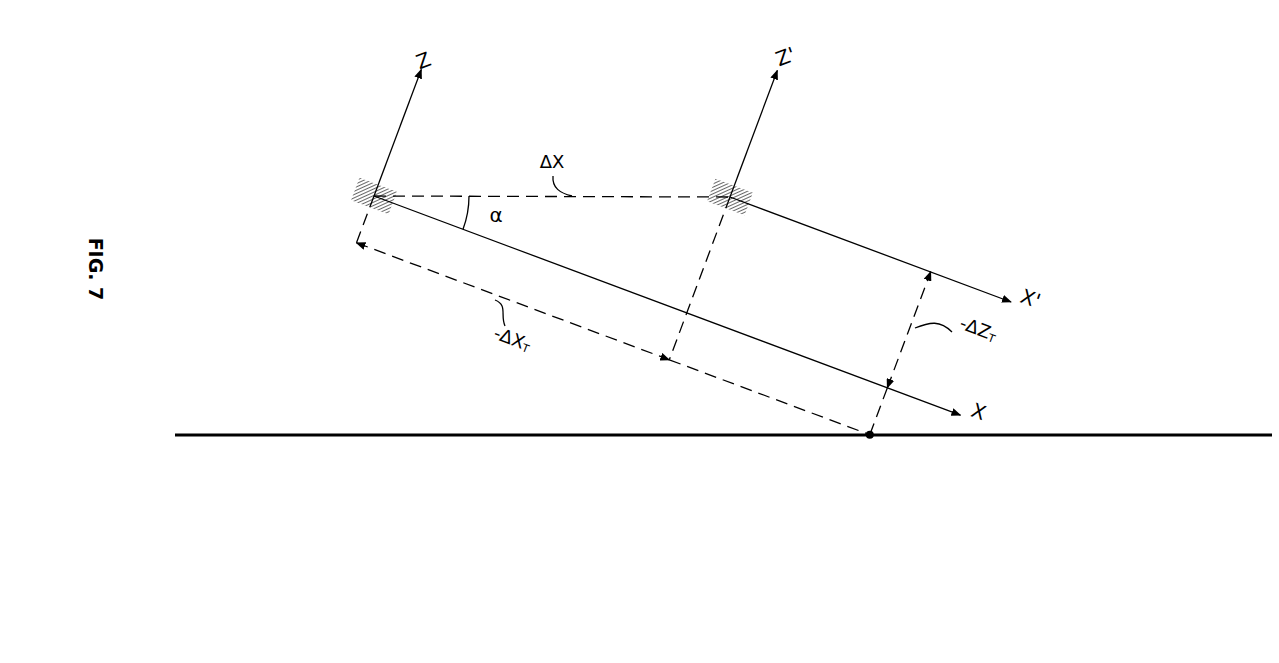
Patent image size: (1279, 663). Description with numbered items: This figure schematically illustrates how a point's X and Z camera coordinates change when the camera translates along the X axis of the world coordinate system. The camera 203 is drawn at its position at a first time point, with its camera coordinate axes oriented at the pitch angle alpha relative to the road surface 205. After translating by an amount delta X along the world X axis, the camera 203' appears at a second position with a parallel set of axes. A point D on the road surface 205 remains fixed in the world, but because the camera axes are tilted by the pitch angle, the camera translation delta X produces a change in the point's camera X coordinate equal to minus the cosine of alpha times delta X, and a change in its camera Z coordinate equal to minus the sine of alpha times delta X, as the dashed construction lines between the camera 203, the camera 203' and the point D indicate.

The camera 203 is at (335, 159).
The camera 203' is at (693, 159).
The road surface 205 is at (1120, 434).
The reference point on ground D is at (868, 438).